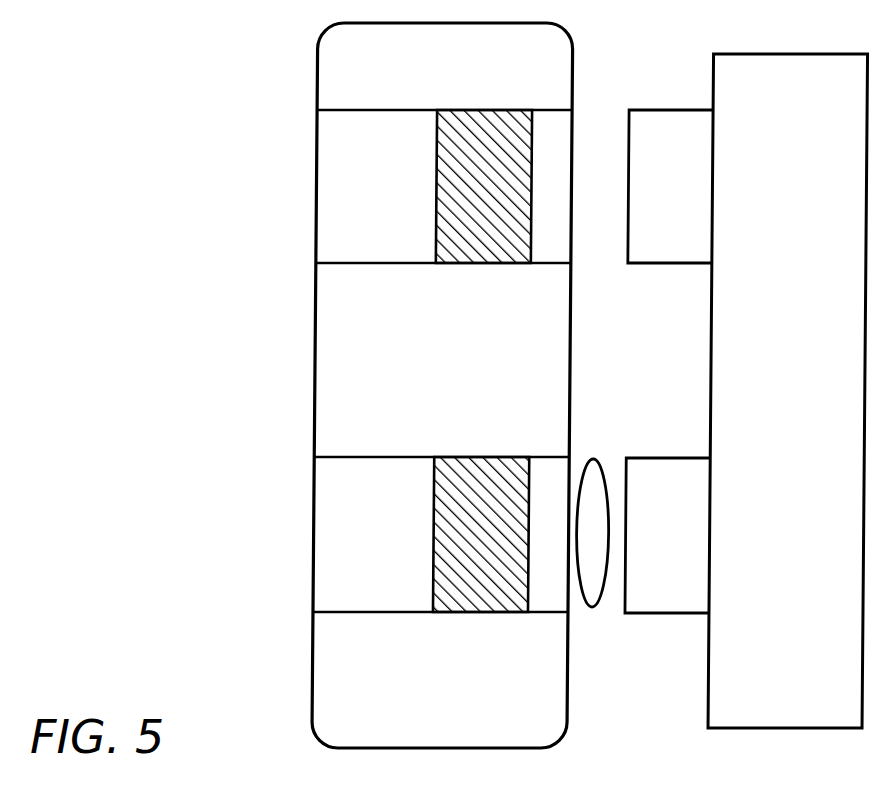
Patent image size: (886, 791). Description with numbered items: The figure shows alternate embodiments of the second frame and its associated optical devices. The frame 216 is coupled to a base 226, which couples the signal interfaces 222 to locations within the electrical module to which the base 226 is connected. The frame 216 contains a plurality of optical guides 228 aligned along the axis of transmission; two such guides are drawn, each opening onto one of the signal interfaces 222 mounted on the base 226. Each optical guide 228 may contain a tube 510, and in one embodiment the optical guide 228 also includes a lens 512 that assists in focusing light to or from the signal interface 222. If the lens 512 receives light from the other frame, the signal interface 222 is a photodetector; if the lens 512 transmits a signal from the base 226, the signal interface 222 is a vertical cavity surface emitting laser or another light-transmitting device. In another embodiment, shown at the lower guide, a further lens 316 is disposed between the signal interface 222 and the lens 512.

The frame 216 is at (462, 732).
The tube 510 is at (401, 201).
The lens 512 is at (507, 201).
The optical guide 228 is at (367, 455).
The signal interface 222 is at (696, 201).
The base 226 is at (807, 711).
The lens 316 is at (626, 672).